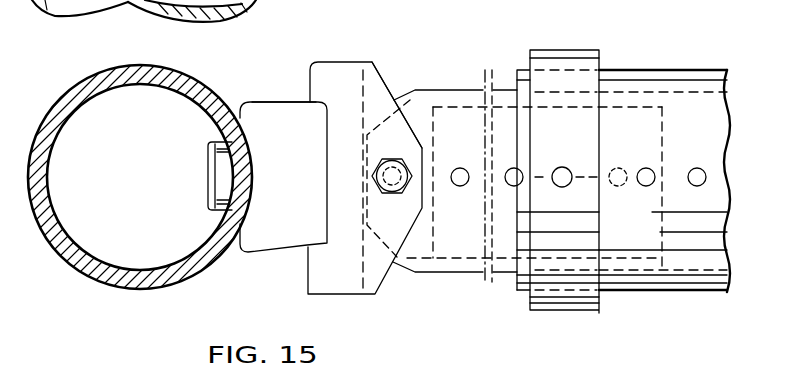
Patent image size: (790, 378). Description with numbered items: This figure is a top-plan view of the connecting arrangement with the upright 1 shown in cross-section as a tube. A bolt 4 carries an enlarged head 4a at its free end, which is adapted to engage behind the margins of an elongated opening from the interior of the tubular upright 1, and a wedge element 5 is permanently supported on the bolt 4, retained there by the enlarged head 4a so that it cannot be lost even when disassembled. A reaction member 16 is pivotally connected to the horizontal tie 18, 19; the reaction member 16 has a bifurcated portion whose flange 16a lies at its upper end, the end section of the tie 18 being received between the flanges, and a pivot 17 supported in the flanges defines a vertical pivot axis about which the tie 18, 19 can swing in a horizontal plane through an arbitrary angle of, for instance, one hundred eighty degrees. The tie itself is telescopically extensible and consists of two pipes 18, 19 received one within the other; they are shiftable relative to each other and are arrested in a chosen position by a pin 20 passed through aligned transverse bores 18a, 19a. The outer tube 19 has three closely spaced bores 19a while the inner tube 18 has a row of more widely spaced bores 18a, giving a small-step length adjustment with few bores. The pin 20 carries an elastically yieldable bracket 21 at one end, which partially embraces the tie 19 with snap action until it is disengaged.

The upright 1 is at (64, 95).
The bolt 4 is at (281, 205).
The enlarged head 4a is at (222, 178).
The wedge element 5 is at (269, 101).
The reaction member 16 is at (334, 52).
The flange 16a is at (378, 93).
The pivot 17 is at (392, 196).
The horizontal tie 18 is at (459, 238).
The transverse bores 18a is at (459, 168).
The horizontal tie 19 is at (632, 70).
The transverse bores 19a is at (697, 168).
The pin 20 is at (562, 167).
The bracket 21 is at (562, 243).